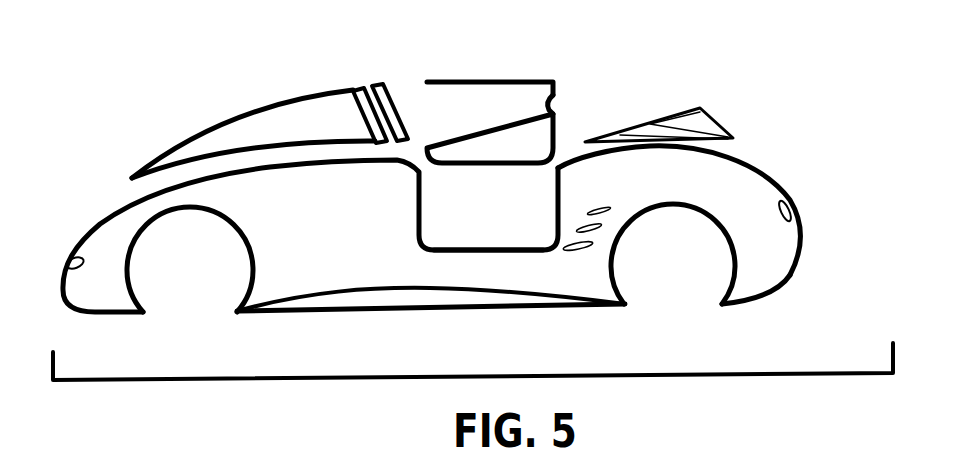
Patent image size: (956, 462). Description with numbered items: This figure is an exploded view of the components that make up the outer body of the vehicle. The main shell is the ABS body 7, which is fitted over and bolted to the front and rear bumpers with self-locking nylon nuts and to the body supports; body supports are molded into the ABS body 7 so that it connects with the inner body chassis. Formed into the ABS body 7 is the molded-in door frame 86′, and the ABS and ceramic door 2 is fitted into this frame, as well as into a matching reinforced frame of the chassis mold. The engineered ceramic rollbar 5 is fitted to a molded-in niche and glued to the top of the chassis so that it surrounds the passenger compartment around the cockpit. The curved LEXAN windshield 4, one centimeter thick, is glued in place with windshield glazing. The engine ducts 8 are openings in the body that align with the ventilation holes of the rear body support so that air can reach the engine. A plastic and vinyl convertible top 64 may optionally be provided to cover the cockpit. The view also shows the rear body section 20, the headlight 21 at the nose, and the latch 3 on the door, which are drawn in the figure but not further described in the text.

The door 2 is at (477, 82).
The roof panel latch 3 is at (553, 103).
The windshield 4 is at (297, 117).
The rollbar 5 is at (372, 88).
The ABS body 7 is at (782, 288).
The engine ducts 8 is at (582, 250).
The rear body section 20 is at (803, 231).
The headlight 21 is at (66, 262).
The convertible top 64 is at (713, 115).
The door frame 86′ is at (478, 253).